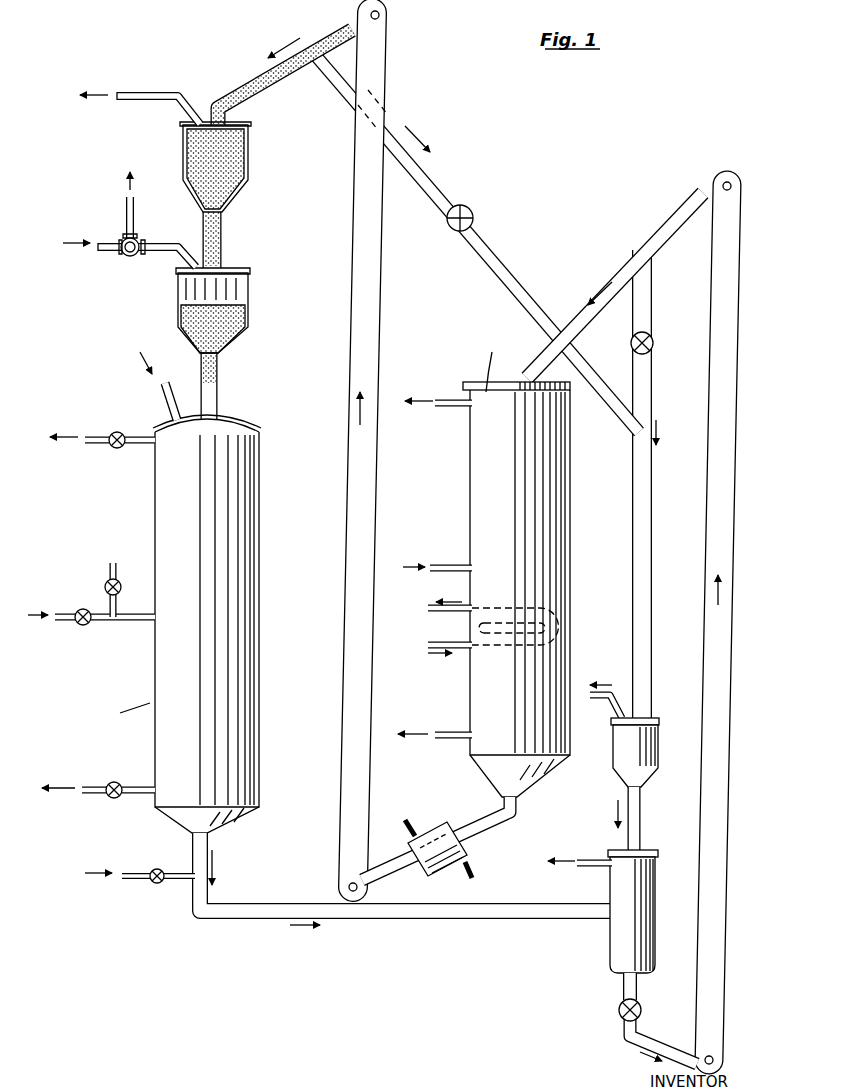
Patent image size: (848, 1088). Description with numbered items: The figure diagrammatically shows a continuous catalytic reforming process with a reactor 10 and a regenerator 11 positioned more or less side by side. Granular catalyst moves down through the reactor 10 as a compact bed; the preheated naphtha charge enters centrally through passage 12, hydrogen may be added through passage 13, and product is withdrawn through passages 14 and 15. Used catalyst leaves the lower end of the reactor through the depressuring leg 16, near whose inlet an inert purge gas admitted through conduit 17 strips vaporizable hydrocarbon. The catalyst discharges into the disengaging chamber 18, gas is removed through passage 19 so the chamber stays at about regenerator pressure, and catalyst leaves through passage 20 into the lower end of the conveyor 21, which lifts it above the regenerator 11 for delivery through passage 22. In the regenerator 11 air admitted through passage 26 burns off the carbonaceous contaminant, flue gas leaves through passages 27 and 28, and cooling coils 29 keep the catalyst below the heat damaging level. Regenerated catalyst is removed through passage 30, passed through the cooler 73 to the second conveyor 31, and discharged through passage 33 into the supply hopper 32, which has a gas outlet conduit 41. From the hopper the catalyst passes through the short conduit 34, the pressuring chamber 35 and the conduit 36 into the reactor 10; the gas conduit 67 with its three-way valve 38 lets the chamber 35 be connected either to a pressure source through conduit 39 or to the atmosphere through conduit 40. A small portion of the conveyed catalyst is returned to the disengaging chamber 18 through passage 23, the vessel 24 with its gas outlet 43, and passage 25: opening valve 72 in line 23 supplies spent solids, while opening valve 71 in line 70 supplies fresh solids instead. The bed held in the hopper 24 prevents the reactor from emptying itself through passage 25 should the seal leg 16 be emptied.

The reactor 10 is at (262, 524).
The regenerator 11 is at (552, 510).
The passage 12 is at (122, 623).
The passage 13 is at (108, 573).
The passage 14 is at (96, 448).
The passage 15 is at (130, 798).
The depressuring leg 16 is at (255, 921).
The conduit 17 is at (149, 872).
The disengaging chamber 18 is at (612, 953).
The passage 19 is at (605, 859).
The passage 20 is at (620, 1031).
The conveyor 21 is at (729, 584).
The passage 22 is at (622, 270).
The passage 23 is at (631, 614).
The vessel 24 is at (617, 759).
The passage 25 is at (645, 829).
The passage 26 is at (459, 563).
The passage 27 is at (452, 398).
The passage 28 is at (451, 741).
The cooling coils 29 is at (458, 653).
The passage 30 is at (403, 862).
The second conveyor 31 is at (343, 656).
The supply hopper 32 is at (250, 160).
The passage 33 is at (247, 77).
The passage 34 is at (225, 245).
The chamber 35 is at (250, 303).
The passage 36 is at (222, 393).
The three-way valve 38 is at (129, 257).
The conduit 39 is at (100, 250).
The conduit 40 is at (128, 207).
The gas outlet conduit 41 is at (134, 93).
The gas outlet 43 is at (612, 704).
The gas conduit 67 is at (170, 238).
The line 70 is at (490, 250).
The valve 71 is at (476, 213).
The valve 72 is at (654, 344).
The cooler 73 is at (440, 866).